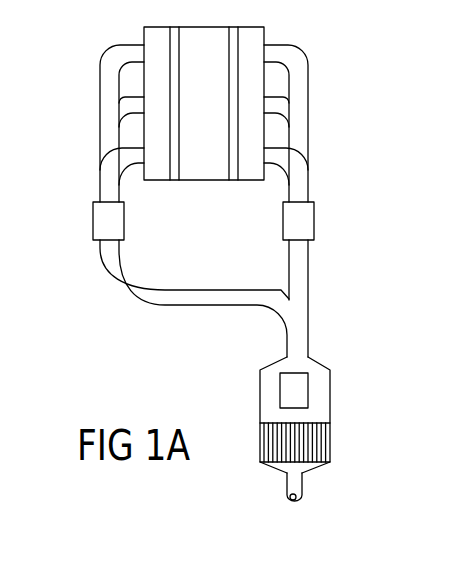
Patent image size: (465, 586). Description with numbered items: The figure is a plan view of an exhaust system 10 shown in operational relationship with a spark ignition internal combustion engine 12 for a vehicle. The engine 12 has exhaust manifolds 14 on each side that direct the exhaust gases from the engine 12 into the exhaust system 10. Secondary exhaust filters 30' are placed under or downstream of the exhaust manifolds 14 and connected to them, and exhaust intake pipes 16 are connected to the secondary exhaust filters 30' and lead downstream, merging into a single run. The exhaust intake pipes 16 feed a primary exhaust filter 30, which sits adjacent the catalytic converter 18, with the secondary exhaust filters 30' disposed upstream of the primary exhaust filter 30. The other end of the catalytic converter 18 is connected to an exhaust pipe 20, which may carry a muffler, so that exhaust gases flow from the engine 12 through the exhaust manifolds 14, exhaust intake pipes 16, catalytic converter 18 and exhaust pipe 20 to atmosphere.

The exhaust system 10 is at (355, 255).
The spark ignition internal combustion engine 12 is at (215, 47).
The exhaust manifolds 14 is at (112, 121).
The exhaust intake pipes 16 is at (190, 298).
The primary exhaust filter 30 is at (335, 426).
The secondary exhaust filters 30' is at (206, 211).
The catalytic converter 18 is at (330, 442).
The exhaust pipe 20 is at (305, 480).